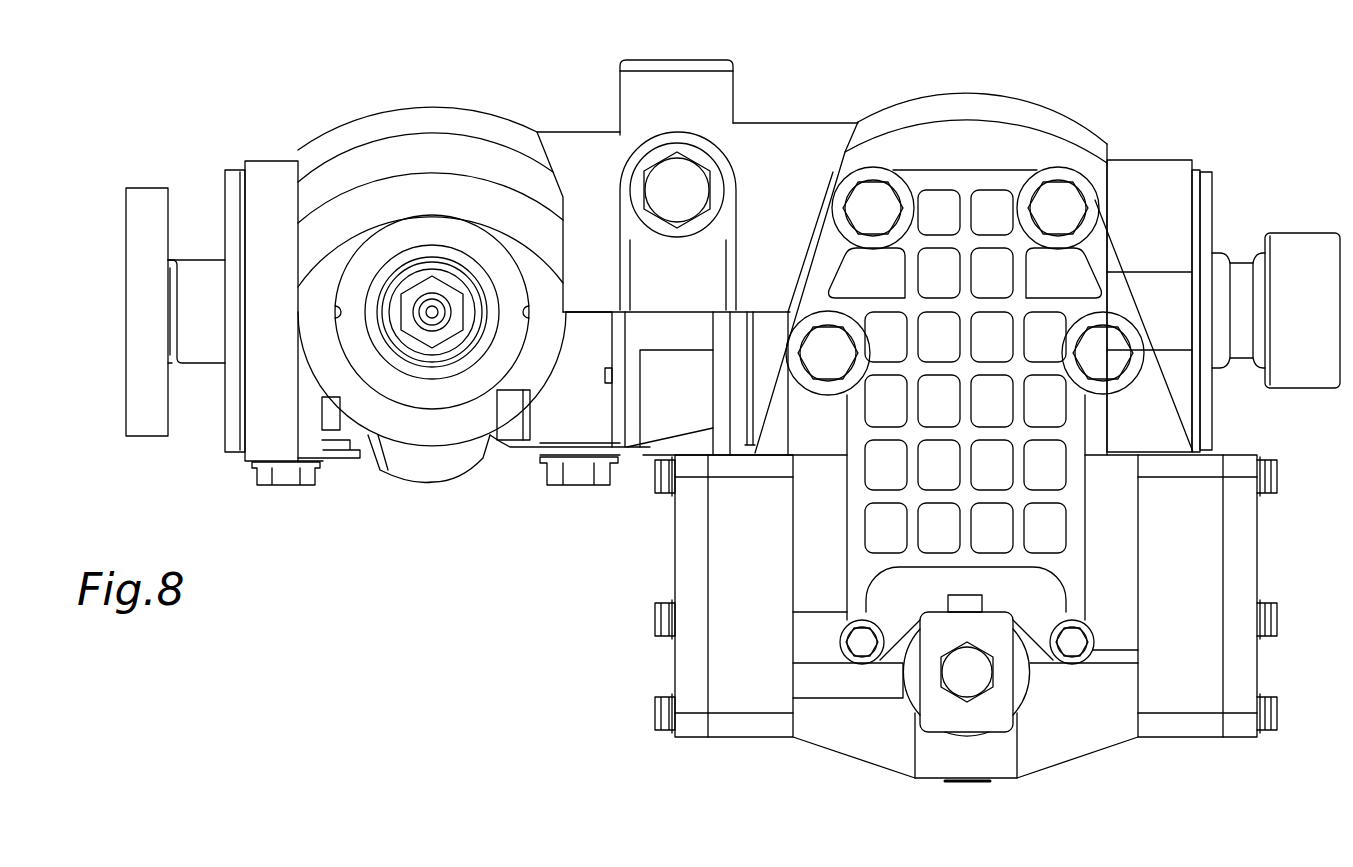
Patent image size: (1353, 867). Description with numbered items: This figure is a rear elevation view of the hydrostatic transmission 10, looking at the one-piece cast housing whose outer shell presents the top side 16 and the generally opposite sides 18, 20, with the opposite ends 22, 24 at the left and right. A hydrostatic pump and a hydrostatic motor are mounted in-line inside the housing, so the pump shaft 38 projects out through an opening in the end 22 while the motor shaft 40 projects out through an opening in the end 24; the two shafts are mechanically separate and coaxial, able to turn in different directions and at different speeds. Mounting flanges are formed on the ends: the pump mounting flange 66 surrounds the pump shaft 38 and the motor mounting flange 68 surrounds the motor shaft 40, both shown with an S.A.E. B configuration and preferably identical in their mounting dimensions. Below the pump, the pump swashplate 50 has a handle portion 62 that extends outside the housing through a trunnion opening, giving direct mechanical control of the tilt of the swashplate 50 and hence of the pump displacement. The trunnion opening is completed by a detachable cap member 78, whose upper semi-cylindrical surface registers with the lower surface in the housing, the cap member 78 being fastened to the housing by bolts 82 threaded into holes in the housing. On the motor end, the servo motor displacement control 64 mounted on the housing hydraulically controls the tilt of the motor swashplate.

The hydrostatic transmission 10 is at (485, 645).
The top side 16 is at (525, 447).
The side 18 is at (758, 212).
The side 20 is at (585, 132).
The end 22 is at (225, 192).
The end 24 is at (1212, 197).
The pump shaft 38 is at (210, 365).
The motor shaft 40 is at (1243, 365).
The pump swashplate 50 is at (440, 482).
The handle portion 62 is at (417, 347).
The servo motor displacement control 64 is at (1256, 549).
The pump mounting flange 66 is at (228, 452).
The motor mounting flange 68 is at (1205, 432).
The cap member 78 is at (358, 450).
The bolt 82 is at (287, 485).